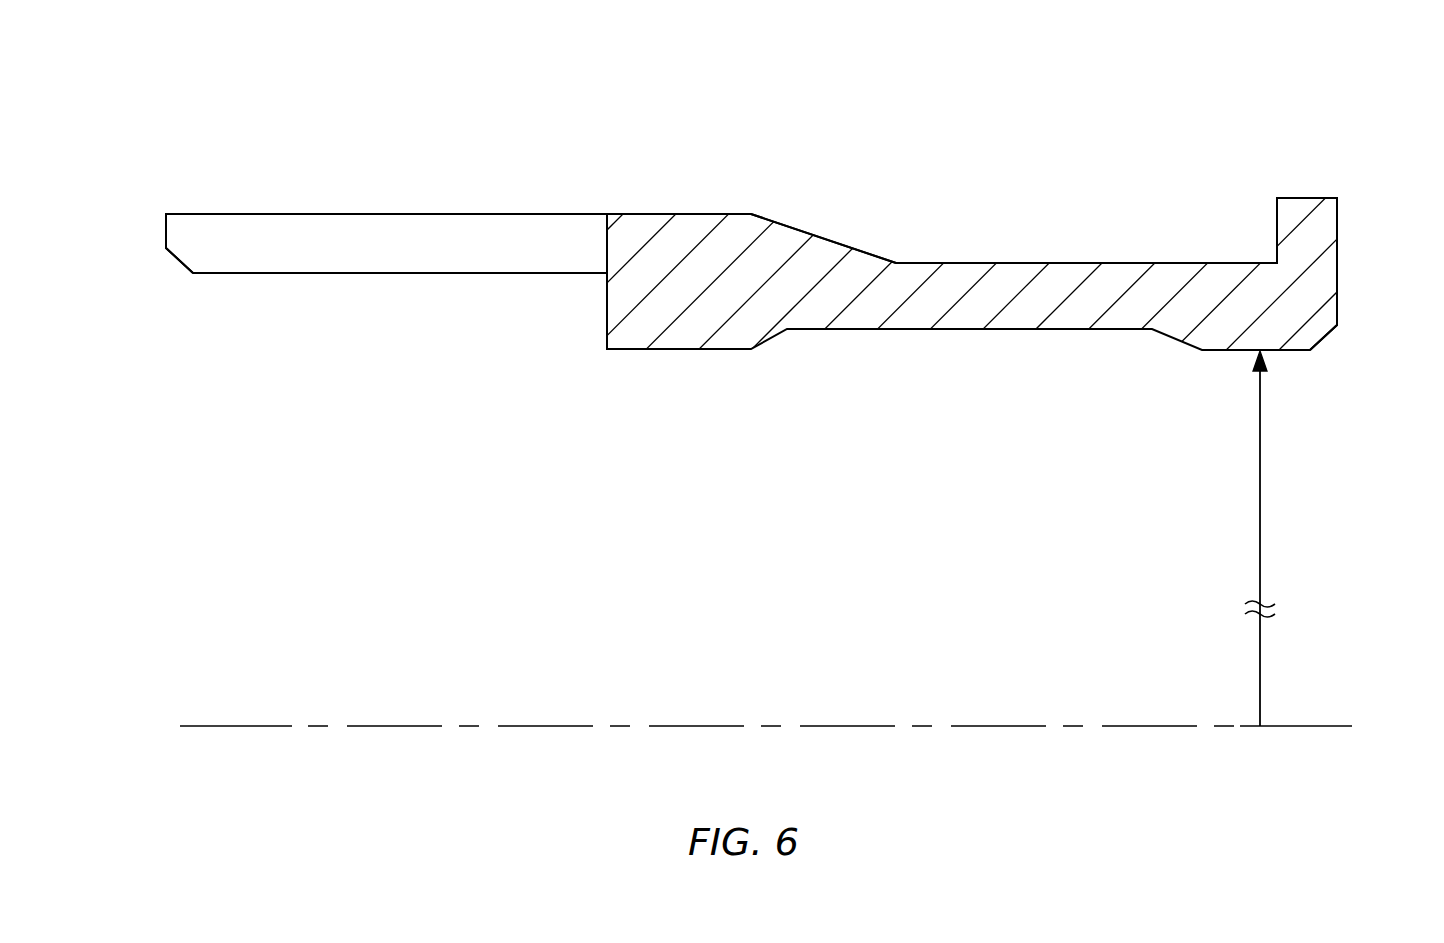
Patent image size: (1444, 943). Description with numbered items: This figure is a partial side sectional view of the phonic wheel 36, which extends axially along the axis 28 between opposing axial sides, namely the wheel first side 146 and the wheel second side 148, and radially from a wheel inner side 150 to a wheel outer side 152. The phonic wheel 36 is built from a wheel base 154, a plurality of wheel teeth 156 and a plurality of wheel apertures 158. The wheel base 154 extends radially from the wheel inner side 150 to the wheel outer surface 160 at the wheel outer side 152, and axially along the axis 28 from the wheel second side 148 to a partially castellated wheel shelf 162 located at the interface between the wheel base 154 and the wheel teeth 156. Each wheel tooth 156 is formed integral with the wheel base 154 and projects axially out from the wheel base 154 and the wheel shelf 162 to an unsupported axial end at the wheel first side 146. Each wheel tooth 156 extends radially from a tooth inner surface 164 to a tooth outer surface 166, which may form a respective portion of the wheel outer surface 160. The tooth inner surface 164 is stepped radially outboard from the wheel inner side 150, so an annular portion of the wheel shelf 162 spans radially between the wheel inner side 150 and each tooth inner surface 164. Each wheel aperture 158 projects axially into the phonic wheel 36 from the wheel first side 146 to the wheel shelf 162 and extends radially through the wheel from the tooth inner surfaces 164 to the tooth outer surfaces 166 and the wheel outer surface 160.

The phonic wheel 36 is at (1240, 88).
The axis 28 is at (208, 726).
The wheel first side 146 is at (166, 228).
The wheel second side 148 is at (1340, 258).
The wheel inner side 150 is at (678, 349).
The wheel outer side 152 is at (693, 214).
The wheel base 154 is at (960, 263).
The wheel tooth 156 is at (352, 214).
The wheel aperture 158 is at (365, 249).
The wheel outer surface 160 is at (535, 214).
The wheel shelf 162 is at (607, 312).
The tooth inner surface 164 is at (428, 273).
The tooth outer surface 166 is at (403, 214).